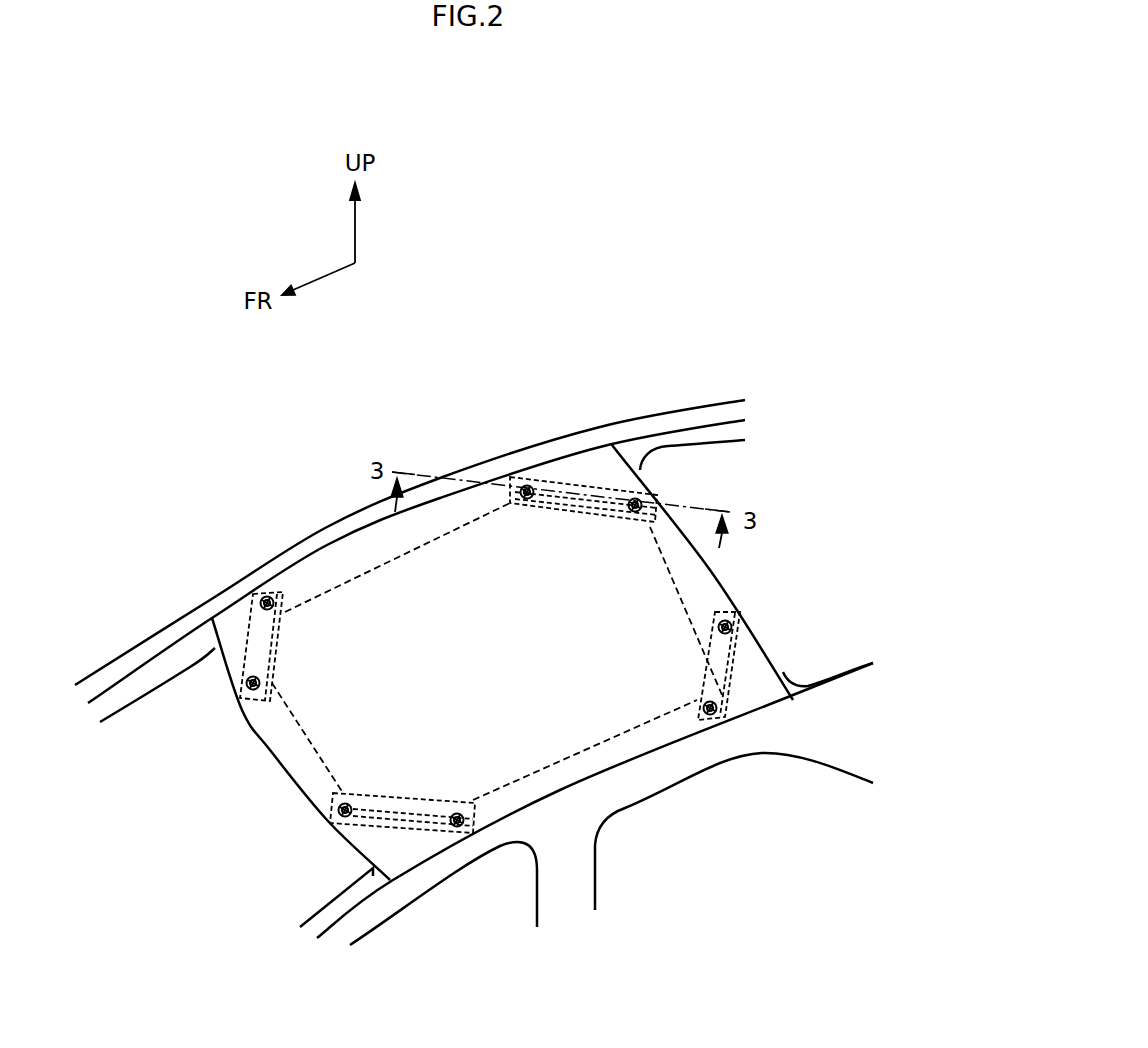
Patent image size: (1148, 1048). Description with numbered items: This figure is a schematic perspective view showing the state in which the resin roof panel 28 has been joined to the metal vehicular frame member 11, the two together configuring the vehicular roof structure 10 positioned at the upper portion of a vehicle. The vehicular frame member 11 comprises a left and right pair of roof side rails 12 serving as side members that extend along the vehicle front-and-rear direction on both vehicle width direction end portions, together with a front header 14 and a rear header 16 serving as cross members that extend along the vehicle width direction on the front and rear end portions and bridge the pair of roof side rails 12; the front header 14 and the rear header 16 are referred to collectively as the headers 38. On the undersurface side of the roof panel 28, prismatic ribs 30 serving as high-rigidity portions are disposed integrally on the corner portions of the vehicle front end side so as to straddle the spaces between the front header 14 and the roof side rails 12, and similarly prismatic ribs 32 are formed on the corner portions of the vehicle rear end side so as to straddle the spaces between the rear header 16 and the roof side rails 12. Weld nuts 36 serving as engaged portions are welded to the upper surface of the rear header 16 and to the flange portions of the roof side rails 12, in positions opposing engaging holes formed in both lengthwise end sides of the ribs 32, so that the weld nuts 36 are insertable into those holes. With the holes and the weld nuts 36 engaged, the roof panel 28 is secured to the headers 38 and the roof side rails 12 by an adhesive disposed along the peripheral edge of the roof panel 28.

The vehicular roof structure 10 is at (665, 357).
The vehicular frame member 11 is at (198, 583).
The roof side rail 12 is at (313, 578).
The front header 14 is at (282, 750).
The rear header 16 is at (710, 592).
The roof panel 28 is at (345, 540).
The rib 30 is at (240, 698).
The rib 32 is at (575, 473).
The weld nut 36 is at (633, 522).
The header 38 is at (546, 662).